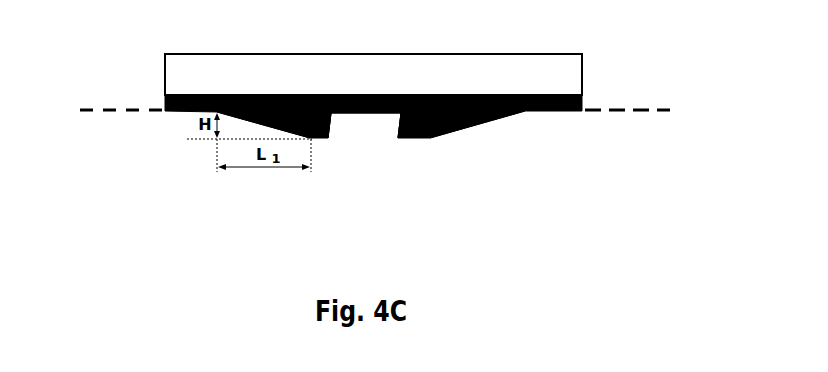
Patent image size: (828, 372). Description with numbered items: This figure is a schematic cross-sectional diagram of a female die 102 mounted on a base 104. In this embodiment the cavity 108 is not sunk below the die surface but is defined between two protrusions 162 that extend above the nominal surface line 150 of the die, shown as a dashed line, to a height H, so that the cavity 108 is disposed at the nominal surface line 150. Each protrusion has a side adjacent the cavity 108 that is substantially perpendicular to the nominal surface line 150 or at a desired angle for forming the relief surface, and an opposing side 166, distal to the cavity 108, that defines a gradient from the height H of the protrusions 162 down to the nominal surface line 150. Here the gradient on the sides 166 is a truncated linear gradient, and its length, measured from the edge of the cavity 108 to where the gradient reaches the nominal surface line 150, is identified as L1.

The female die 102 is at (165, 102).
The base 104 is at (187, 78).
The cavity 108 is at (363, 115).
The nominal surface line 150 is at (630, 114).
The protrusions 162 is at (332, 122).
The opposing side 166 is at (292, 132).